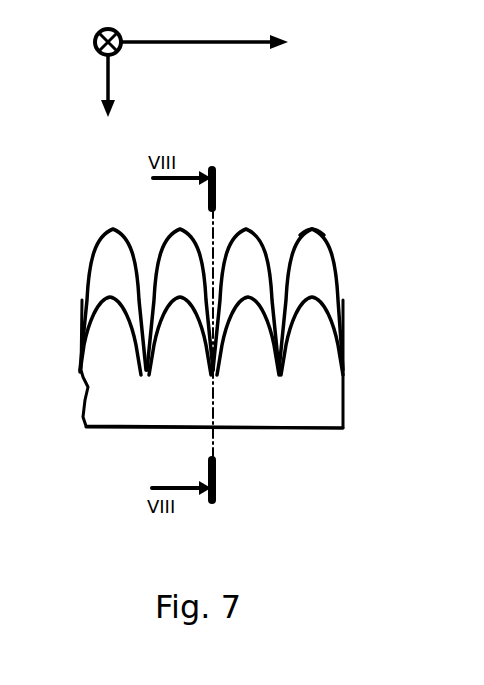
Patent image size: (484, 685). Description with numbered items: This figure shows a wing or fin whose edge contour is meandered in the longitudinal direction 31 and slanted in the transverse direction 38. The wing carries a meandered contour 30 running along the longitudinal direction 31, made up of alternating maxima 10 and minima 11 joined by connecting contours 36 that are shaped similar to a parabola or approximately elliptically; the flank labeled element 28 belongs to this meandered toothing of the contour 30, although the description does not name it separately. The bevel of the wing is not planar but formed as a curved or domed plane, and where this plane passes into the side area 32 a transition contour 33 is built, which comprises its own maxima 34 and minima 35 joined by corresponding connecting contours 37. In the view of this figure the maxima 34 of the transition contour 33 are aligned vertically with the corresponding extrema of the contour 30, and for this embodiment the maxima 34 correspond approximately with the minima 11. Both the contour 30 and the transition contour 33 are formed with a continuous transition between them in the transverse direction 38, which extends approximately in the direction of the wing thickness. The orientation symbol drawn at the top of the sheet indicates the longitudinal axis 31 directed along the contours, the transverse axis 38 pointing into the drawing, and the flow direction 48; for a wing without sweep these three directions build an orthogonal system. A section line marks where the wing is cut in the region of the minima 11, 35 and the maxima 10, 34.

The maxima of contour 10 is at (114, 227).
The minima of contour 11 is at (81, 302).
The tooth flank 28 is at (262, 257).
The meandered contour 30 is at (326, 218).
The longitudinal direction 31 is at (205, 28).
The side area 32 is at (297, 382).
The transition contour 33 is at (316, 298).
The maxima of transition contour 34 is at (111, 303).
The minima of transition contour 35 is at (278, 372).
The connecting contour 36 is at (290, 258).
The connecting contours of transition contour 37 is at (163, 327).
The transverse direction 38 is at (83, 37).
The flow direction 48 is at (130, 85).